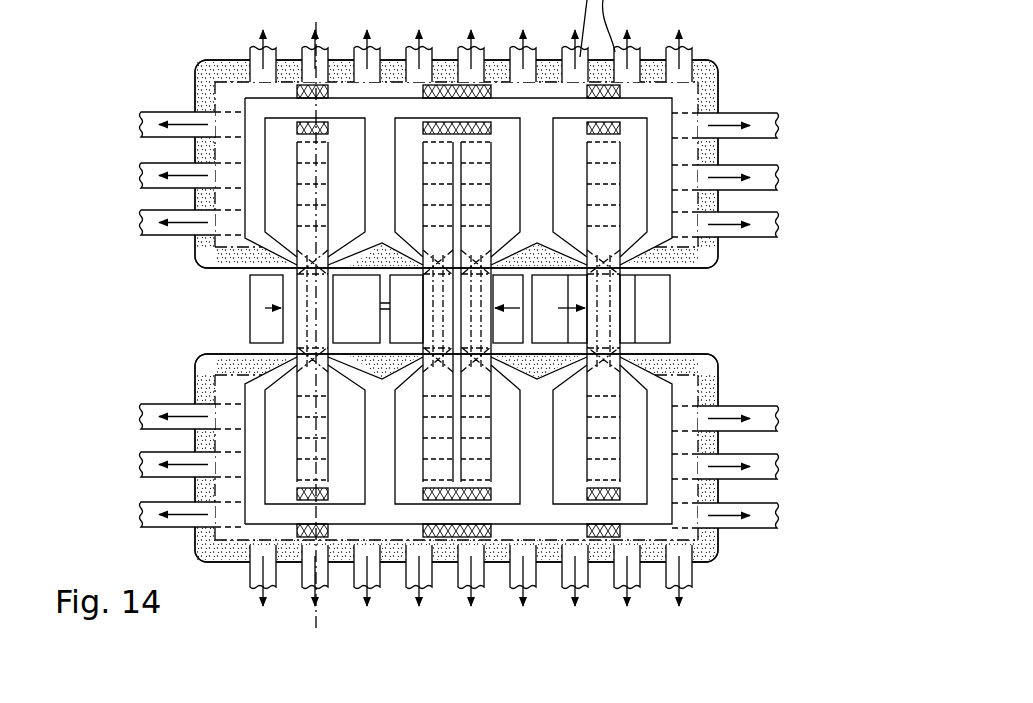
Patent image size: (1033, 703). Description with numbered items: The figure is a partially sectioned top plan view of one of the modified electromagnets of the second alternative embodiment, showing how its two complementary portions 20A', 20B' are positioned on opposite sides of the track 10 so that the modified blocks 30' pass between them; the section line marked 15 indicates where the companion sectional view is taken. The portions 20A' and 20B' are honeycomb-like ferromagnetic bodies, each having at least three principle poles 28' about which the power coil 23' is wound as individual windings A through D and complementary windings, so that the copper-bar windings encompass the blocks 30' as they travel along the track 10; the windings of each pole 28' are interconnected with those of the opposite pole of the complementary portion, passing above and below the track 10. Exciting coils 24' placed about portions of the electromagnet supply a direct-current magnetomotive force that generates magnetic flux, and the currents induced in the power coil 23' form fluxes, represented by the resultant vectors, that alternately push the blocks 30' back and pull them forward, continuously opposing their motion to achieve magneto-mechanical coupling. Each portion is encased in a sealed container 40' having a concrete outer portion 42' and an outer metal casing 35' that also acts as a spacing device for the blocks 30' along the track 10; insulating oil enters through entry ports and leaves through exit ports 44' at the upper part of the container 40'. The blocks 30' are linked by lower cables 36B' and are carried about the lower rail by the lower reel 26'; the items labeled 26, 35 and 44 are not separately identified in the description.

The track 10 is at (232, 307).
The section line 15 is at (316, 0).
The complementary portion of modified electromagnet 20A' is at (509, 180).
The complementary portion of modified electromagnet 20B' is at (502, 460).
The power coil 23' is at (386, 291).
The exciting coils 24' is at (432, 321).
The inlet tube 26 is at (344, 10).
The lower reel 26' is at (148, 11).
The principle poles 28' is at (441, 311).
The modified blocks 30' is at (483, 310).
The housing corner 35 is at (689, 273).
The outer metal casing 35' is at (714, 346).
The lower cables 36B' is at (219, 11).
The sealed container 40' is at (505, 311).
The concrete outer portion 42' is at (491, 287).
The fluid tubes 44 is at (471, 303).
The exit ports 44' is at (464, 320).